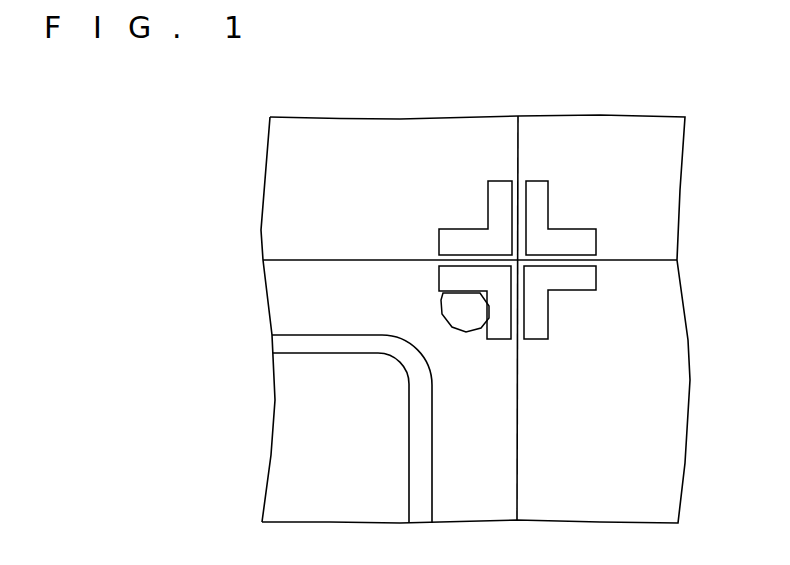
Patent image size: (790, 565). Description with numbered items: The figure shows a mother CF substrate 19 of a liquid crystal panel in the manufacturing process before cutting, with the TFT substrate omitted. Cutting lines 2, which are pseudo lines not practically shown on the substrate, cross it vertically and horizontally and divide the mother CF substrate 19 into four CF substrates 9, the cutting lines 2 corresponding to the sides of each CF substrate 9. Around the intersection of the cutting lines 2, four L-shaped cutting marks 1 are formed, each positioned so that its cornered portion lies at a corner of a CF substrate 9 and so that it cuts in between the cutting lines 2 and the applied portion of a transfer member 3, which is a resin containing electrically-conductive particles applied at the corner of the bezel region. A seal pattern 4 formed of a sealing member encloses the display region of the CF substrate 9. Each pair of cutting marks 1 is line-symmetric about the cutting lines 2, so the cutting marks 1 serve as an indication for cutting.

The mother CF substrate 19 is at (374, 104).
The CF substrate 9 is at (288, 455).
The cutting lines 2 is at (282, 260).
The cutting mark 1 is at (447, 283).
The transfer member 3 is at (470, 322).
The seal pattern 4 is at (385, 352).